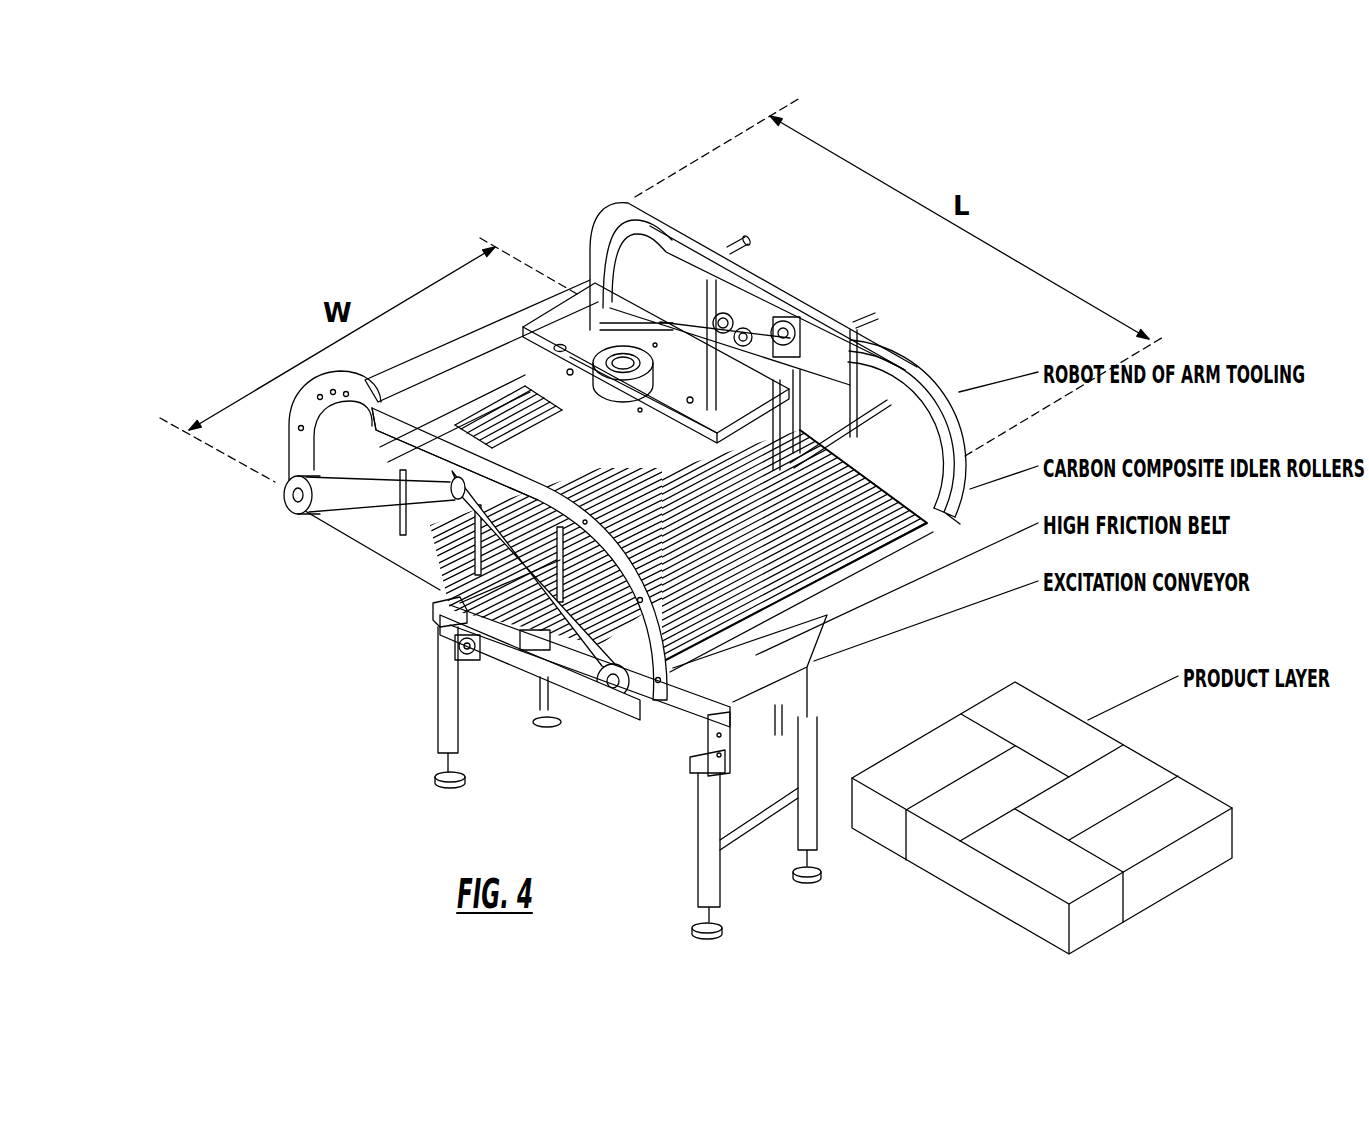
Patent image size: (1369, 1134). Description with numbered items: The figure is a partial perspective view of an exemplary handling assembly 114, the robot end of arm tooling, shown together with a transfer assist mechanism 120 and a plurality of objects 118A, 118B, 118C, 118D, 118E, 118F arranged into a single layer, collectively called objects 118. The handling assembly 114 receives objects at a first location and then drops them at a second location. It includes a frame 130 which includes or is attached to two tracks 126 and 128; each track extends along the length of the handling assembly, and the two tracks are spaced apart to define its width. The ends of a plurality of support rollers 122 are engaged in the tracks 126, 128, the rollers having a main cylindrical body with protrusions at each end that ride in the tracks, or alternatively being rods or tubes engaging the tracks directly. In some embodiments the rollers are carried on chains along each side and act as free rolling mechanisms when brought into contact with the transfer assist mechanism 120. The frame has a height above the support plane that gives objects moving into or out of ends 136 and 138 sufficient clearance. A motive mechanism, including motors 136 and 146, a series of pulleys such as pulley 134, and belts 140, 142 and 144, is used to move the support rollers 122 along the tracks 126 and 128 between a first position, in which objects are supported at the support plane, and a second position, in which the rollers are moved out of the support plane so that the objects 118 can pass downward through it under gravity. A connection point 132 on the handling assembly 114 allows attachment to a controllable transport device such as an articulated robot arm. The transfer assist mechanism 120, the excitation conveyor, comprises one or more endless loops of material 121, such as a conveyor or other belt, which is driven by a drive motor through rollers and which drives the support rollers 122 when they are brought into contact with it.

The handling assembly 114 is at (755, 270).
The objects 118 is at (1065, 818).
The object 118A is at (949, 779).
The object 118B is at (1054, 738).
The object 118C is at (1020, 802).
The object 118D is at (1124, 804).
The object 118E is at (1169, 842).
The object 118F is at (1062, 872).
The transfer assist mechanism 120 is at (440, 676).
The endless loop of material 121 is at (734, 683).
The support rollers 122 is at (457, 540).
The track 126 is at (927, 367).
The track 128 is at (294, 432).
The frame 130 is at (505, 370).
The connection point 132 is at (603, 352).
The pulley 134 is at (280, 482).
The motor 136 is at (827, 310).
The end 138 is at (488, 361).
The belt 140 is at (374, 496).
The belt 142 is at (470, 545).
The belt 144 is at (512, 600).
The motor 146 is at (505, 414).